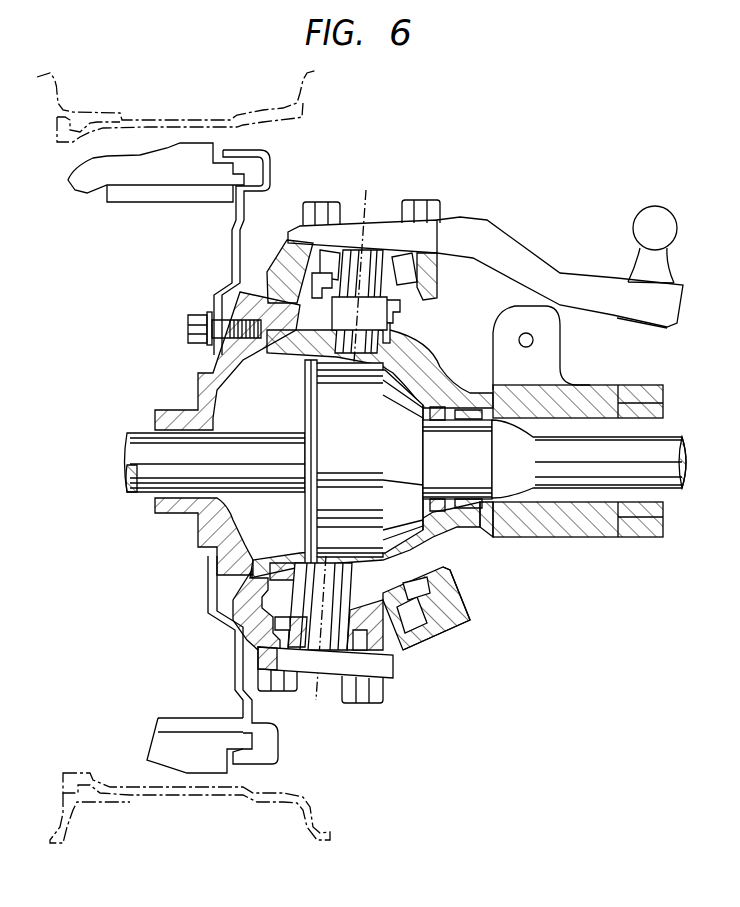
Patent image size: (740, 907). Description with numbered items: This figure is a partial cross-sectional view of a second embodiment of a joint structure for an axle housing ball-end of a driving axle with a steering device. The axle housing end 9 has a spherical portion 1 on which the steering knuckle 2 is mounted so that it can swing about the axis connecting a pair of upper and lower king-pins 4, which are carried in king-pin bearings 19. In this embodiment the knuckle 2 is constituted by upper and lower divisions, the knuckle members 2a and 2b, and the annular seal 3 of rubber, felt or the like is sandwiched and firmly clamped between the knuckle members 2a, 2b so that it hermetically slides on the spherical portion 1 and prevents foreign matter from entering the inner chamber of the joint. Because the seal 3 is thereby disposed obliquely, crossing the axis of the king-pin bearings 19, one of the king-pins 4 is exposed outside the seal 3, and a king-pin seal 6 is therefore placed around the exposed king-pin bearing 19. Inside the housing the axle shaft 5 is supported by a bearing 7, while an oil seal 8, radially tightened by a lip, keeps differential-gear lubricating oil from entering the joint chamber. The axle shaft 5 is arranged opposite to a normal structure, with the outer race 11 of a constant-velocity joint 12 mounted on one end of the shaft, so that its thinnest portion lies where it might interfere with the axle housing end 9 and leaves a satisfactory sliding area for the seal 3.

The spherical portion 1 is at (445, 537).
The knuckle 2 is at (432, 648).
The knuckle member 2a is at (453, 633).
The knuckle member 2b is at (403, 637).
The seal 3 is at (285, 290).
The king-pins 4 is at (360, 320).
The axle shaft 5 is at (520, 477).
The king-pin seal 6 is at (320, 215).
The bearing 7 is at (468, 409).
The oil seal 8 is at (440, 407).
The axle housing end 9 is at (600, 393).
The outer race 11 is at (330, 512).
The constant-velocity joint 12 is at (302, 412).
The king-pin bearings 19 is at (437, 276).